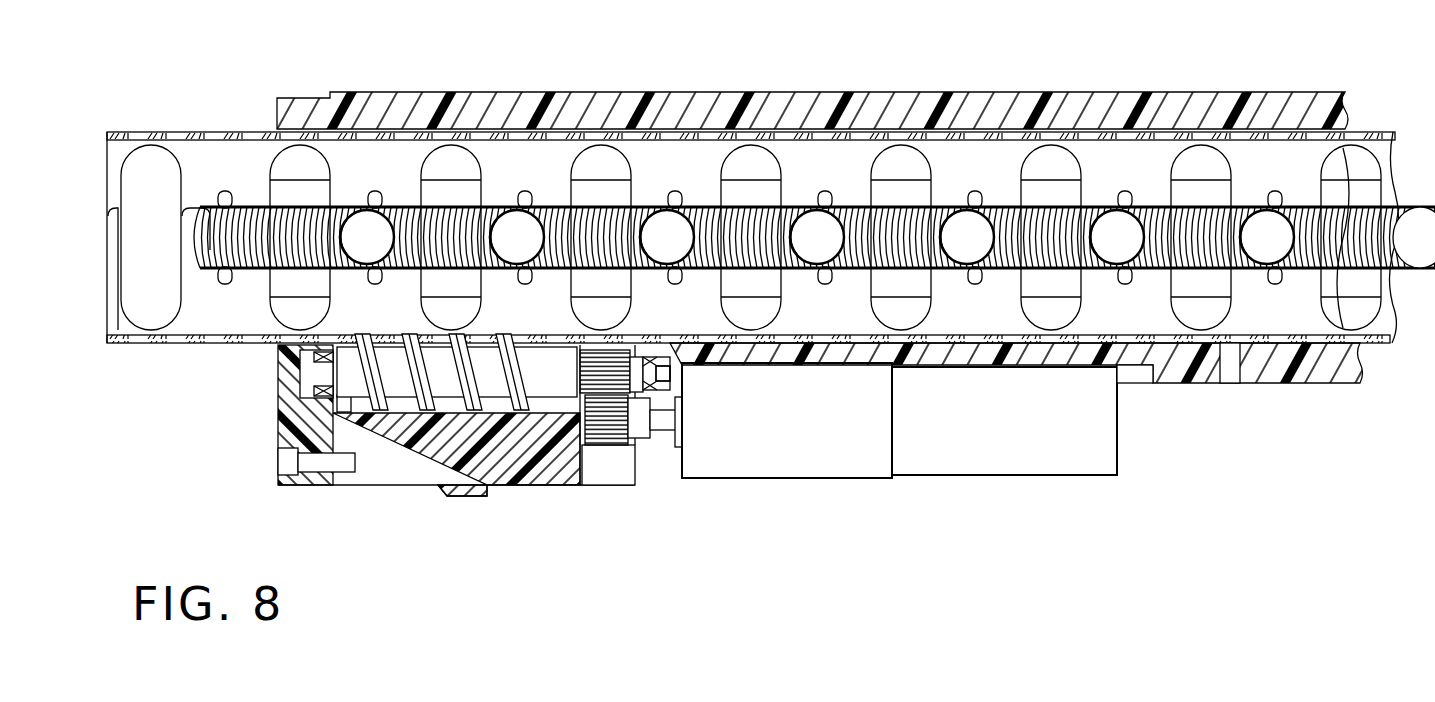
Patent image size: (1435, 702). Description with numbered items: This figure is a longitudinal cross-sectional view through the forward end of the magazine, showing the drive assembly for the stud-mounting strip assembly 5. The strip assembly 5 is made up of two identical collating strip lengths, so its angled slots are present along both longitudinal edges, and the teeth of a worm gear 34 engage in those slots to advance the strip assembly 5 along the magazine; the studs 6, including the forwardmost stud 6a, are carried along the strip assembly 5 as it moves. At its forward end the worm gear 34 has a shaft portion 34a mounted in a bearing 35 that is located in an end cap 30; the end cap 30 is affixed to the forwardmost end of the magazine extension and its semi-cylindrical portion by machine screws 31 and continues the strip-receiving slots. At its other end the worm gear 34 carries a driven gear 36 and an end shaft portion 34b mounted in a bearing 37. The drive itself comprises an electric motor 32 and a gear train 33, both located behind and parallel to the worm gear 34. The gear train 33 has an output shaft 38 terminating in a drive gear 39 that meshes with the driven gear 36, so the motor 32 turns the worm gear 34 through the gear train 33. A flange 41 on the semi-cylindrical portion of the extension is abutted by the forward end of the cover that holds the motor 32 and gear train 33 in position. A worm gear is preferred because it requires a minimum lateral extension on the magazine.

The stud-mounting strip assembly 5 is at (176, 125).
The engagement rings 6 is at (502, 218).
The first engagement ring 6a is at (349, 223).
The end cap 30 is at (295, 415).
The machine screws 31 is at (290, 461).
The electric motor 32 is at (985, 447).
The gear train 33 is at (798, 443).
The worm gear 34 is at (424, 370).
The shaft portion 34a is at (298, 382).
The end shaft portion 34b is at (668, 380).
The bearing 35 is at (300, 351).
The driven gear 36 is at (628, 348).
The bearing 37 is at (662, 361).
The output shaft 38 is at (660, 423).
The drive gear 39 is at (602, 428).
The flange 41 is at (475, 498).